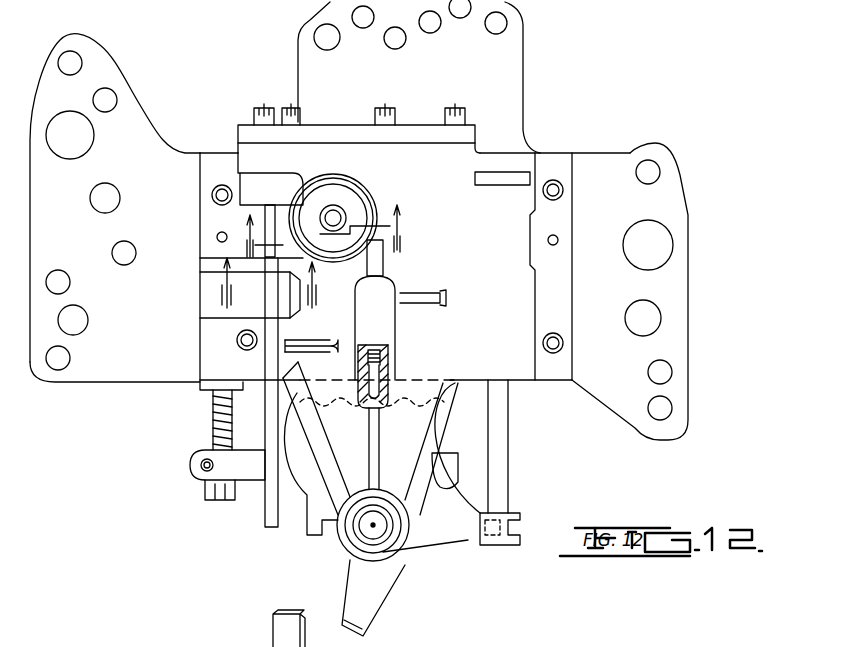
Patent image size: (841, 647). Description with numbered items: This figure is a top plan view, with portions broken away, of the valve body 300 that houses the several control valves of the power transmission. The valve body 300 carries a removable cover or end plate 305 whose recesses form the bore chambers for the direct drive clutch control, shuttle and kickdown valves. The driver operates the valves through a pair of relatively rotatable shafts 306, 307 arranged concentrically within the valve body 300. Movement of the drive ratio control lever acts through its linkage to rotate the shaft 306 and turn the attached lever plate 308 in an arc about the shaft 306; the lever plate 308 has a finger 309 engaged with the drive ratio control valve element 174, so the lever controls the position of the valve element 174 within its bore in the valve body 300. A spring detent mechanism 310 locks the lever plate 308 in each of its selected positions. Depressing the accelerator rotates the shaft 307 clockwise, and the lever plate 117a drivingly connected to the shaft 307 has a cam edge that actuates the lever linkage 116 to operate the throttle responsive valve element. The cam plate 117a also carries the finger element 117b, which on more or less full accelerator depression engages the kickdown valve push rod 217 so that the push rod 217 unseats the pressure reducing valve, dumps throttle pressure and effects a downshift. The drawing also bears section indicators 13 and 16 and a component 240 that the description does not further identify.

The valve body 300 is at (537, 148).
The removable cover or end plate 305 is at (320, 130).
The dial 240 is at (372, 196).
The section line 13 is at (318, 231).
The section line 16 is at (235, 282).
The spring detent mechanism 310 is at (387, 356).
The lever linkage 116 is at (242, 453).
The kickdown valve push rod 217 is at (266, 508).
The lever plate 117a is at (310, 495).
The rotatable shaft 306 is at (356, 541).
The finger element 117b is at (352, 603).
The rotatable shaft 307 is at (378, 534).
The lever plate 308 is at (458, 543).
The finger 309 is at (516, 531).
The drive ratio control valve element 174 is at (505, 437).